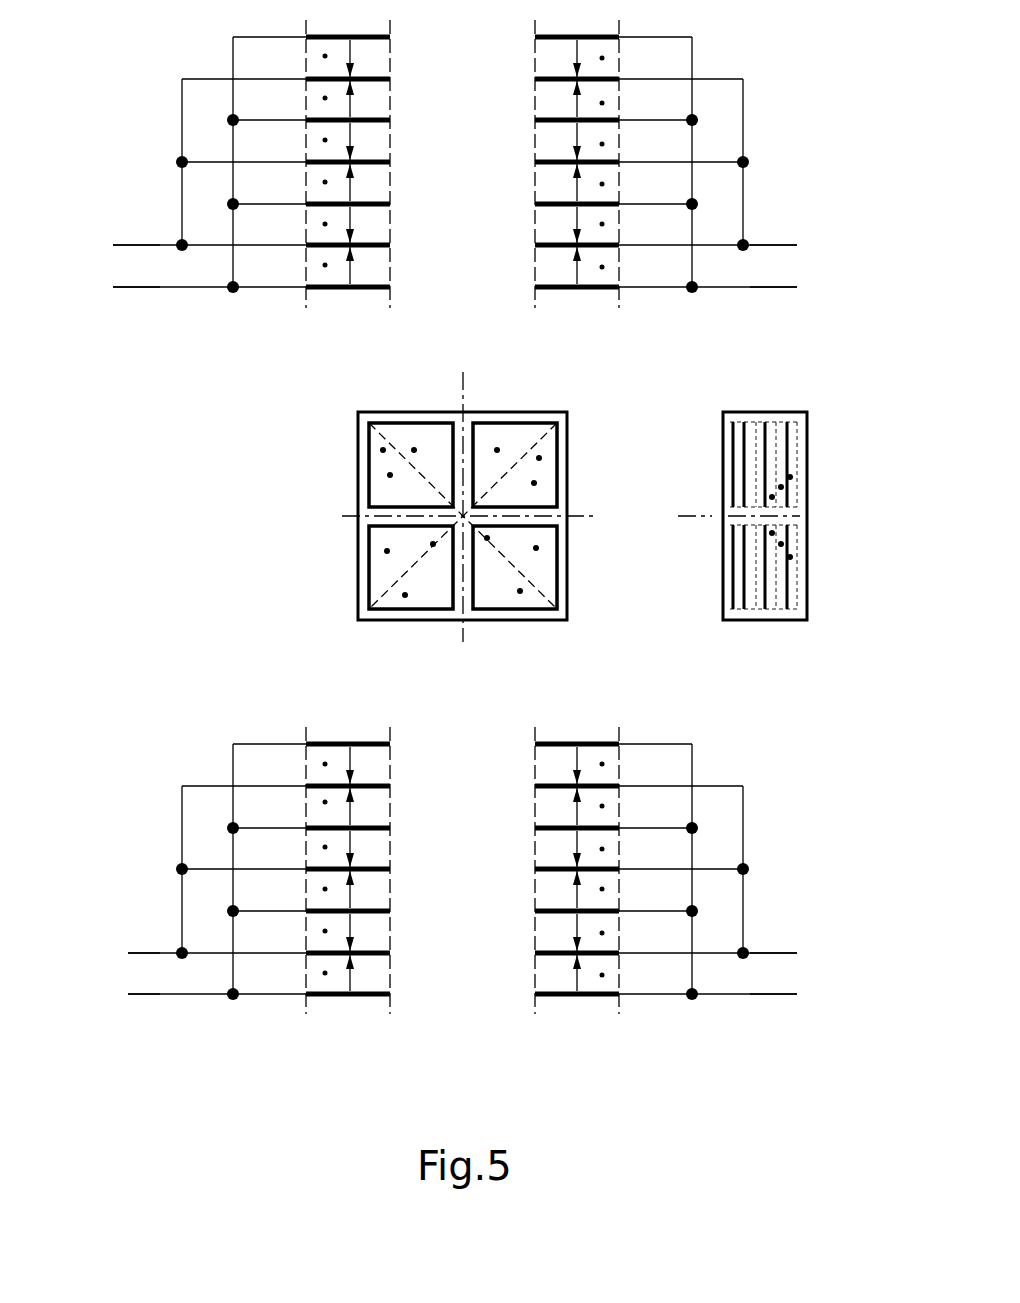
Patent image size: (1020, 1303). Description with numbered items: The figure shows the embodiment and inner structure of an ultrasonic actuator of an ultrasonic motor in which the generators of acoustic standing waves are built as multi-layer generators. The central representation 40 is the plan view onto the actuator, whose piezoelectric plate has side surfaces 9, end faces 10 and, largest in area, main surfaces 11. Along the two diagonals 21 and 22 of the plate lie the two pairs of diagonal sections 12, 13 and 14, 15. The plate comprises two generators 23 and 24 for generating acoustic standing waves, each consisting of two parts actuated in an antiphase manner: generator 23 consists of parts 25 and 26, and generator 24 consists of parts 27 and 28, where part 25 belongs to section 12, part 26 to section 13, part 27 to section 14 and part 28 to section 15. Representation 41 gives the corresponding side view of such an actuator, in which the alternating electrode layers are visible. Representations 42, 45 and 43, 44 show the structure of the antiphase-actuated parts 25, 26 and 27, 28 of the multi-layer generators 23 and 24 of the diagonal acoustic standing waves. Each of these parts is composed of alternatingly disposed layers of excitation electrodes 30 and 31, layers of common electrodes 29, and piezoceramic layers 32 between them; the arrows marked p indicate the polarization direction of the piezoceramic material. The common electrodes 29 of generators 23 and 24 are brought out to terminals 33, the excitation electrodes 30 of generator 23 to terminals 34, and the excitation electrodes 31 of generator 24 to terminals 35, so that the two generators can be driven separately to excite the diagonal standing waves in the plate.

The side surfaces 9 is at (356, 487).
The end faces 10 is at (403, 410).
The main surfaces 11 is at (514, 438).
The diagonal section 12 is at (390, 475).
The diagonal section 13 is at (536, 548).
The diagonal section 14 is at (534, 483).
The diagonal section 15 is at (387, 551).
The diagonal 21 is at (487, 538).
The diagonal 22 is at (433, 544).
The generator 23 is at (414, 450).
The generator 24 is at (497, 450).
The part 25 is at (383, 450).
The part 26 is at (520, 591).
The part 27 is at (539, 458).
The part 28 is at (405, 595).
The common electrode 29 is at (840, 592).
The excitation electrode 30 is at (742, 478).
The excitation electrode 31 is at (775, 566).
The piezoelectric ceramic layer 32 is at (325, 265).
The terminals 33 is at (454, 620).
The terminals 34 is at (454, 619).
The terminals 35 is at (454, 619).
The representation 40 is at (497, 524).
The representation 41 is at (762, 570).
The representation 42 is at (251, 198).
The representation 43 is at (666, 195).
The representation 44 is at (259, 905).
The representation 45 is at (666, 906).